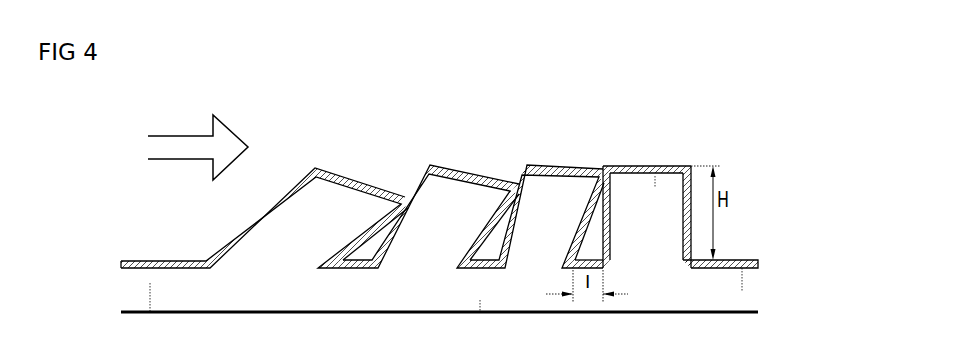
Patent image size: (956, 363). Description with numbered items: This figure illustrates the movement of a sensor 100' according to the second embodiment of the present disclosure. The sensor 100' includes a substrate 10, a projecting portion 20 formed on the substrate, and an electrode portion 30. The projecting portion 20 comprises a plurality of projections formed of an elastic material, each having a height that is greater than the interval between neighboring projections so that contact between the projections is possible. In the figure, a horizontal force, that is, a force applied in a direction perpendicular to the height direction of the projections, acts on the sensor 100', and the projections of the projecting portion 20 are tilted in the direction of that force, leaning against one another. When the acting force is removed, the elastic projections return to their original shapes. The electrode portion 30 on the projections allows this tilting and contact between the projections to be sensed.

The substrate 10 is at (747, 291).
The projecting portion 20 is at (670, 216).
The electrode portion 30 is at (632, 166).
The sensor 100' is at (478, 173).